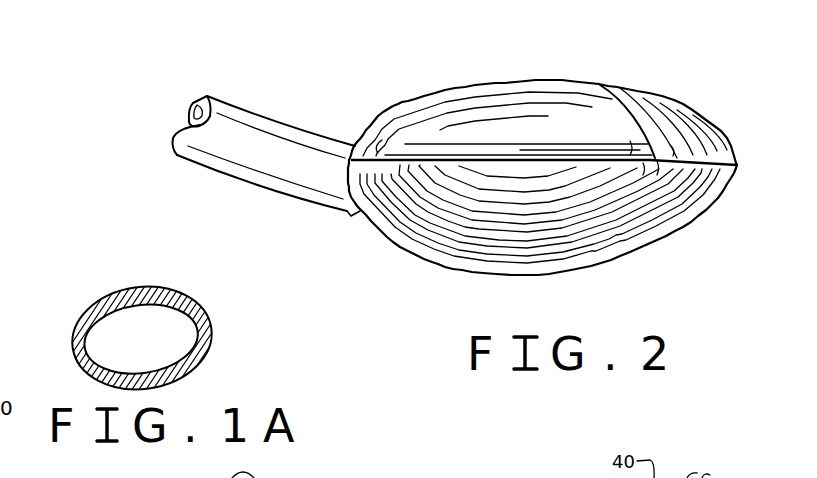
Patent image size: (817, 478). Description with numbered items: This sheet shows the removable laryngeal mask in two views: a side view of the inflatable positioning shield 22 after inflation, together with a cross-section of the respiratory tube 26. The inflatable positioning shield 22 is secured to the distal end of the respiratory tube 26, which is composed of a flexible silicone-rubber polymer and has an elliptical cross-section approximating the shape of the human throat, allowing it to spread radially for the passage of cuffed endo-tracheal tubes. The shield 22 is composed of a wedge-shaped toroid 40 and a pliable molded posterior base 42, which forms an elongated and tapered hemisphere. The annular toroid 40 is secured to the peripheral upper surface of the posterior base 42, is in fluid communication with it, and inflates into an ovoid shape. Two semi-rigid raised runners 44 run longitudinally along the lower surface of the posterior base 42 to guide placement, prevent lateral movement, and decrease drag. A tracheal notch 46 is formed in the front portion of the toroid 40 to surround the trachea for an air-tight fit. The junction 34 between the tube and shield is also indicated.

In FIG. 2, the inflatable positioning shield 22 is at (386, 117).
In FIG. 2, the respiratory tube 26 is at (267, 198).
In FIG. 1A, the respiratory tube 26 is at (210, 330).
In FIG. 2, the collar 34 is at (347, 211).
In FIG. 2, the wedge-shaped toroid 40 is at (690, 108).
In FIG. 2, the posterior base 42 is at (703, 210).
In FIG. 2, the raised runners 44 is at (603, 263).
In FIG. 2, the tracheal notch 46 is at (707, 158).